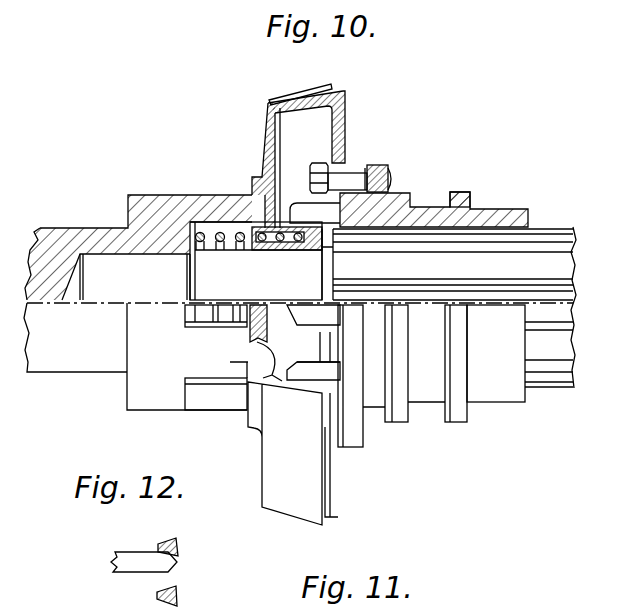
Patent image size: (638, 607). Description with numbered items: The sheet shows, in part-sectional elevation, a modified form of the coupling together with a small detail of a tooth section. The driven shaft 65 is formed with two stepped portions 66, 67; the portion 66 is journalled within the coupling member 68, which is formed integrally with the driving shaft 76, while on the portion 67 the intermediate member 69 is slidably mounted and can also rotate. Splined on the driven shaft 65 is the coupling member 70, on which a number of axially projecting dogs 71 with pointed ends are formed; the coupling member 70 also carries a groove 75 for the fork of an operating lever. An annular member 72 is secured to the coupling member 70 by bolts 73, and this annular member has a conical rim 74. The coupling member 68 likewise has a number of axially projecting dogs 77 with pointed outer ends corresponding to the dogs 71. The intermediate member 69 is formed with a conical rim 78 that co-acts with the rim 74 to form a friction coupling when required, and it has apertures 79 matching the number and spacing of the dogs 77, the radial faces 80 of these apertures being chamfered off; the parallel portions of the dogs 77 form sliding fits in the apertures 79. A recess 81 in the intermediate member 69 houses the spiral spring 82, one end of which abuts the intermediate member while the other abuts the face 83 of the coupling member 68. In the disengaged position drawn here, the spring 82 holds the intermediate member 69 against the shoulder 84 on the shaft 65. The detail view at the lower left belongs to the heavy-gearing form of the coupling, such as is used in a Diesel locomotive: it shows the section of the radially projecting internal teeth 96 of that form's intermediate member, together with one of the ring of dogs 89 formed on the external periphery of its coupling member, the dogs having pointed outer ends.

In FIG. 10, the driven shaft 65 is at (454, 307).
In FIG. 10, the stepped portion 66 is at (107, 276).
In FIG. 10, the stepped portion 67 is at (256, 261).
In FIG. 10, the coupling member 68 is at (150, 228).
In FIG. 10, the intermediate member 69 is at (268, 114).
In FIG. 10, the coupling member 70 is at (413, 222).
In FIG. 10, the dogs 71 is at (318, 212).
In FIG. 10, the annular member 72 is at (345, 113).
In FIG. 10, the bolts 73 is at (353, 180).
In FIG. 10, the conical rim 74 is at (313, 110).
In FIG. 10, the groove 75 is at (443, 198).
In FIG. 10, the driving shaft 76 is at (80, 358).
In FIG. 10, the dogs 77 is at (220, 213).
In FIG. 10, the conical rim 78 is at (300, 96).
In FIG. 10, the apertures 79 is at (273, 378).
In FIG. 10, the radial faces 80 is at (270, 342).
In FIG. 10, the recess 81 is at (268, 243).
In FIG. 10, the spiral spring 82 is at (220, 242).
In FIG. 10, the face 83 is at (186, 249).
In FIG. 10, the shoulder 84 is at (323, 273).
In FIG. 12, the dogs 89 is at (130, 563).
In FIG. 12, the internal teeth 96 is at (176, 590).